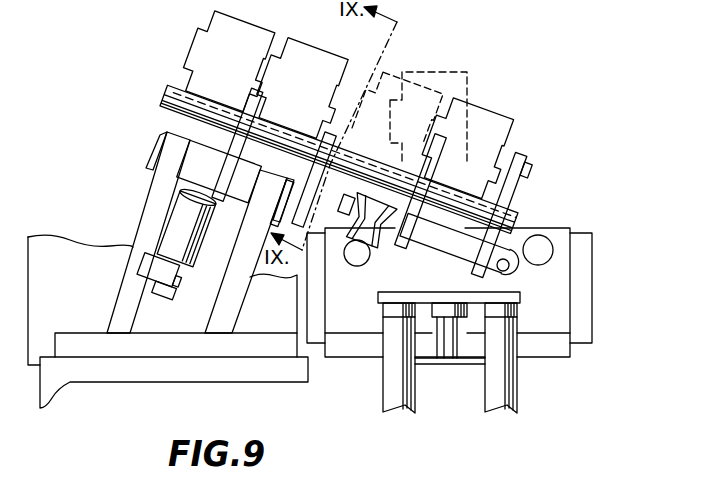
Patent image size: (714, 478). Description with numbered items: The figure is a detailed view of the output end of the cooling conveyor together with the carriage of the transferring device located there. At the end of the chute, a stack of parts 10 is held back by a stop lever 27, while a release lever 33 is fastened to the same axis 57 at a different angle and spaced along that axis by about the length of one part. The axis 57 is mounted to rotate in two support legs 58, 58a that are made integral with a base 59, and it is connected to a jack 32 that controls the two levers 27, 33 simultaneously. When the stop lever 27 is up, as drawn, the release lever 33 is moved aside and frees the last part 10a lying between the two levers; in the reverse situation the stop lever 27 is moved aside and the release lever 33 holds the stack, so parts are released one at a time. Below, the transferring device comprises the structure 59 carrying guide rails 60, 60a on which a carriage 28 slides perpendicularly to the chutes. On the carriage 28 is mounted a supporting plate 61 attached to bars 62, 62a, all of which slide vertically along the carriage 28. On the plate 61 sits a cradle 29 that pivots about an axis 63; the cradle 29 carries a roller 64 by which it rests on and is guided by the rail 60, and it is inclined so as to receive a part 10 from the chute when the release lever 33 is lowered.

The part 10 is at (235, 66).
The last part 10a is at (296, 100).
The stop lever 27 is at (247, 108).
The release lever 33 is at (333, 164).
The axis 57 is at (219, 179).
The jack 32 is at (195, 266).
The support leg 58 is at (121, 285).
The support leg 58a is at (243, 300).
The base 59 is at (101, 382).
The guide rail 60 is at (356, 266).
The guide rail 60a is at (550, 242).
The axis 63 is at (507, 259).
The roller 64 is at (378, 243).
The cradle 29 is at (438, 233).
The carriage 28 is at (345, 327).
The supporting plate 61 is at (518, 297).
The bar 62 is at (383, 394).
The bar 62a is at (517, 397).